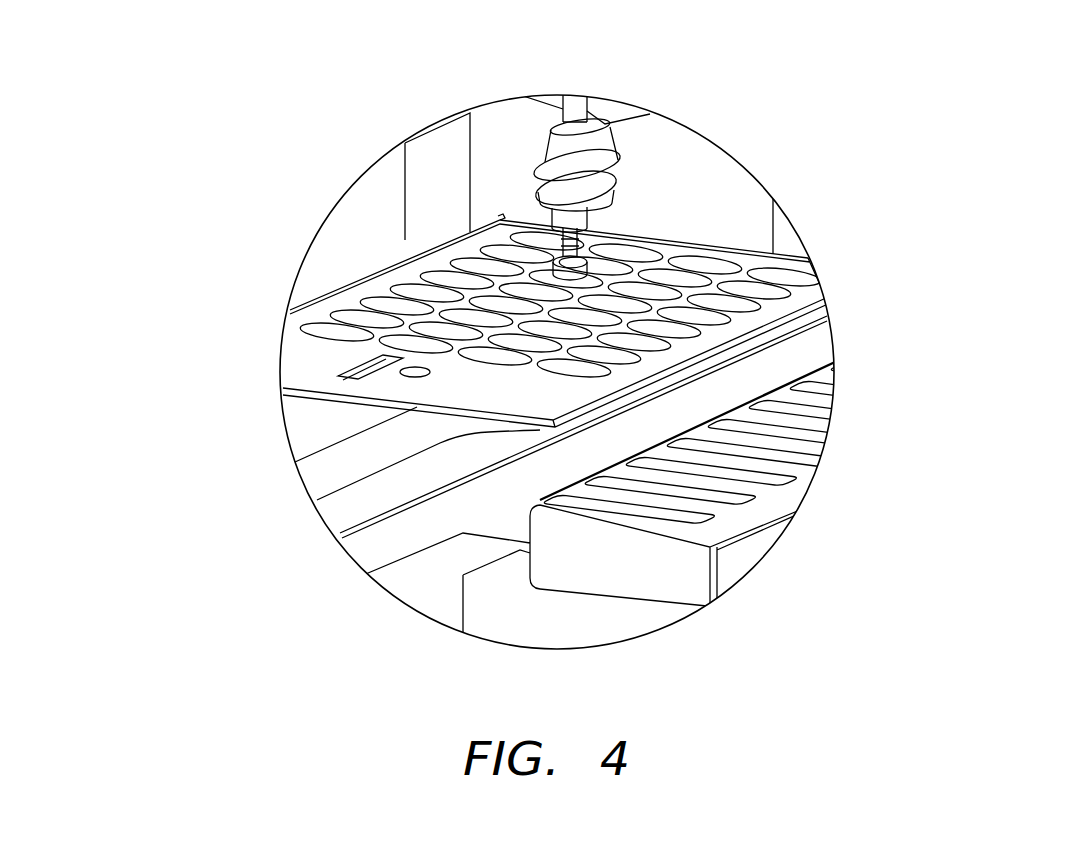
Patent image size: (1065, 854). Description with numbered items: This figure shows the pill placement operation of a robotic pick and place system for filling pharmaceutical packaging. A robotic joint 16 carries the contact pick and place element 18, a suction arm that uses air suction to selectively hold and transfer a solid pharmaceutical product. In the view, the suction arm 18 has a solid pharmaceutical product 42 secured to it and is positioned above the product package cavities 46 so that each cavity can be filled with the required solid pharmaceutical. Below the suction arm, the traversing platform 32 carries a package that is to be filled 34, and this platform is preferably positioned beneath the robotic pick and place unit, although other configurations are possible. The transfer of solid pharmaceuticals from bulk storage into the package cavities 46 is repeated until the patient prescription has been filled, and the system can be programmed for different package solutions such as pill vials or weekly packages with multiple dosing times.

The robotic joint 16 is at (587, 143).
The contact pick and place element 18 is at (578, 238).
The solid pharmaceutical product 42 is at (553, 267).
The product package cavities 46 is at (378, 307).
The traversing platform 32 is at (610, 437).
The package that is to be filled 34 is at (720, 335).